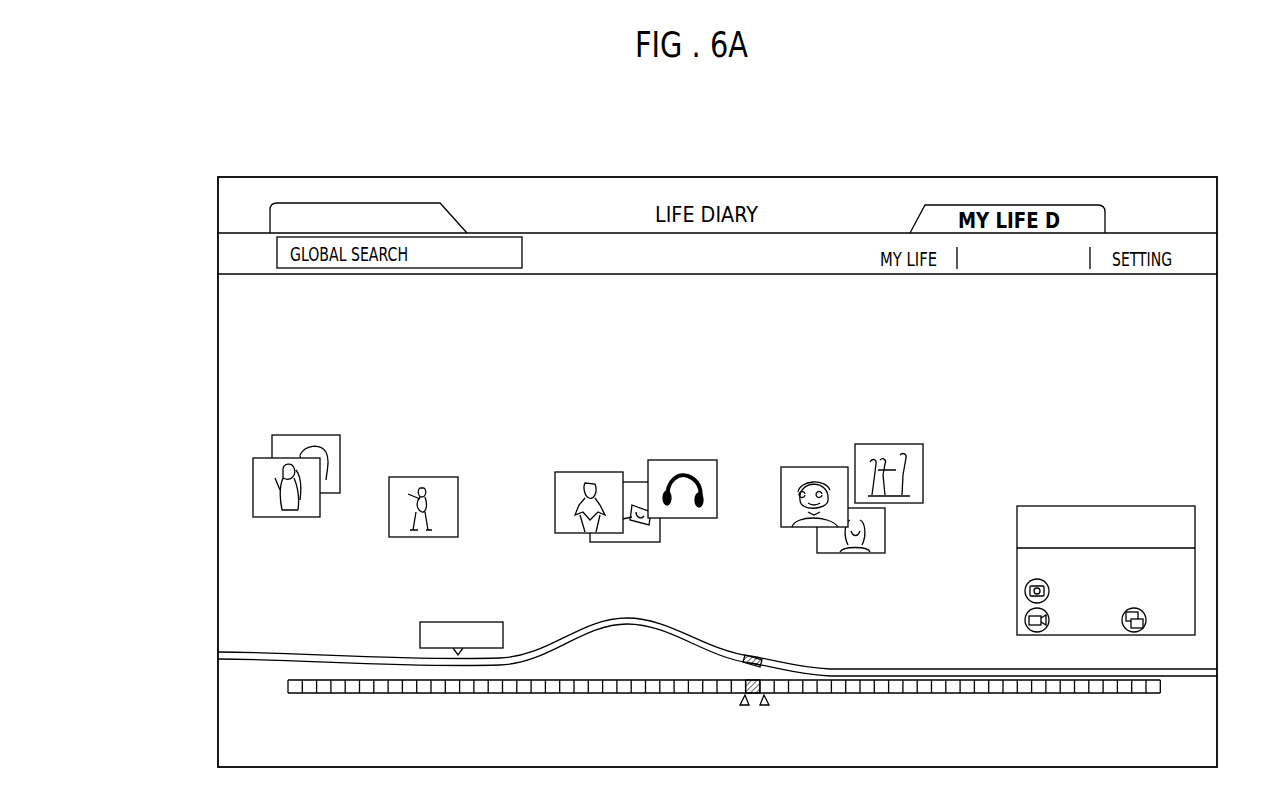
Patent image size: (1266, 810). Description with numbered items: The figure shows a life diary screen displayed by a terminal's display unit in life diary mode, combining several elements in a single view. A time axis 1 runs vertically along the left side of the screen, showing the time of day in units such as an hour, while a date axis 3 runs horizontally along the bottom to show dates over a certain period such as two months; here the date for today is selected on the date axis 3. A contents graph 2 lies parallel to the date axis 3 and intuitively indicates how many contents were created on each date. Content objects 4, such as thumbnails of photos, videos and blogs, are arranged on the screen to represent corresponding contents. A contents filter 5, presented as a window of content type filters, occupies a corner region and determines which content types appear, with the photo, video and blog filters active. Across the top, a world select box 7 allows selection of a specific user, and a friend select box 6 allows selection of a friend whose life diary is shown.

The time axis 1 is at (240, 418).
The contents graph 2 is at (718, 654).
The date axis 3 is at (1160, 689).
The content object 4 is at (685, 460).
The contents filter 5 is at (1145, 506).
The friend select box 6 is at (1009, 276).
The world select box 7 is at (354, 202).